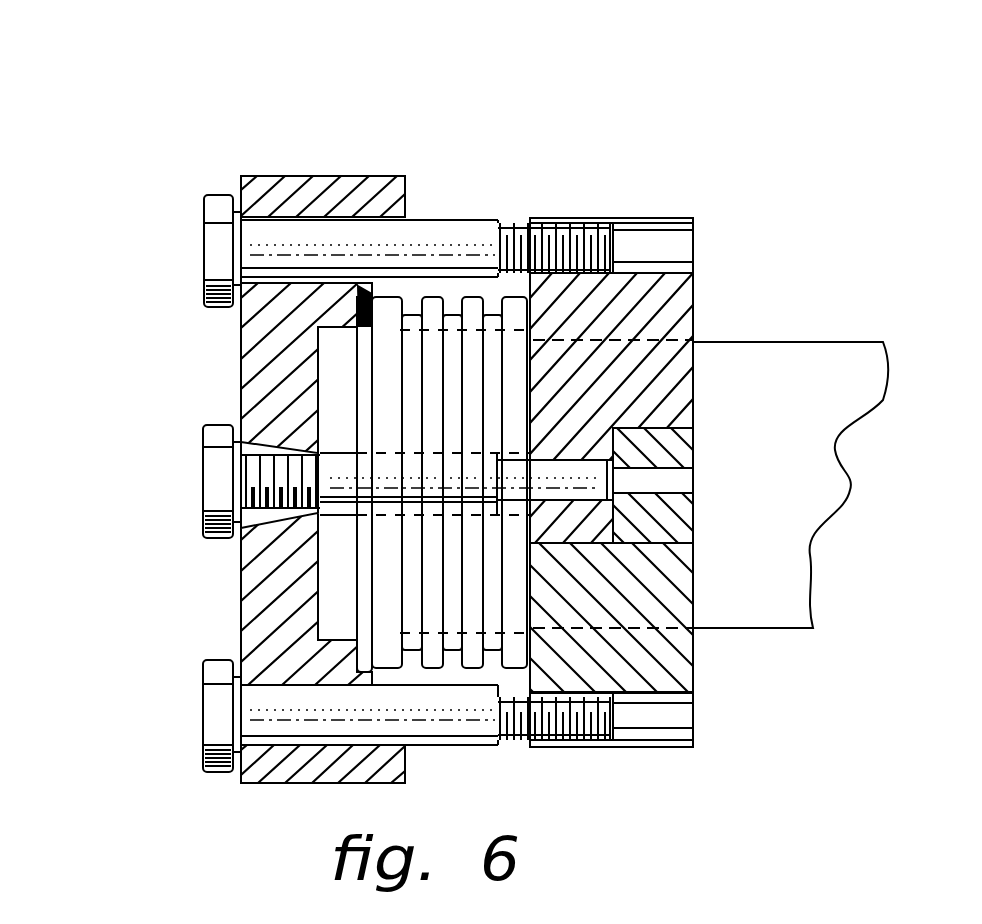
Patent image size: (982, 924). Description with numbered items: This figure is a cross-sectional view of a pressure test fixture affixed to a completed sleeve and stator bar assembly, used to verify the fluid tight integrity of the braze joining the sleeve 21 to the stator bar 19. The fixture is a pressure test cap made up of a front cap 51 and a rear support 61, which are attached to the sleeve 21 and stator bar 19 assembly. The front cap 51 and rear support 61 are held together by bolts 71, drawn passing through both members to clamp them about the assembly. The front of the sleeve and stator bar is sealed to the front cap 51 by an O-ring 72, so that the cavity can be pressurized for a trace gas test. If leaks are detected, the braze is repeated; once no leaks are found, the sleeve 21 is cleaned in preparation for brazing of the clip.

The stator bar 19 is at (778, 342).
The sleeve 21 is at (513, 368).
The front cap 51 is at (292, 176).
The rear support 61 is at (583, 217).
The bolts 71 is at (207, 243).
The O-ring 72 is at (358, 292).